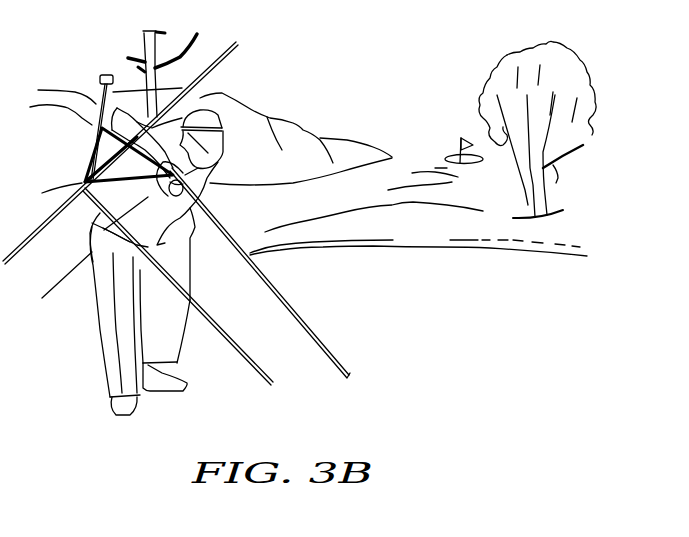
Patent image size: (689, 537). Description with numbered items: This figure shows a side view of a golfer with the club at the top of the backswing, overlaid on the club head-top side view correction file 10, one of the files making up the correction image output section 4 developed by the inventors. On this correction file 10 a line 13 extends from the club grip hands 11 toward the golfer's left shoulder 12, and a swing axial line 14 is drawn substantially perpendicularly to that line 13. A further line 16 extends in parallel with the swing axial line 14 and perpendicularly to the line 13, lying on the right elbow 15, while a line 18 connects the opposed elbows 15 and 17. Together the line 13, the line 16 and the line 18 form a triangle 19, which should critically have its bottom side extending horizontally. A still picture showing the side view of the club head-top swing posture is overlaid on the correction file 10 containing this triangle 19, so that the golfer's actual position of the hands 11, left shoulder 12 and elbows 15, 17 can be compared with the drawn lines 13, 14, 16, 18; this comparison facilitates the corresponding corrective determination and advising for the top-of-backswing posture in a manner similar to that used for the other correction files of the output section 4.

The correction image output section 4 is at (85, 381).
The club head-top side view correction file 10 is at (207, 343).
The club grip hands 11 is at (98, 122).
The left shoulder 12 is at (212, 191).
The line 13 is at (320, 338).
The swing axial line 14 is at (227, 120).
The right elbow 15 is at (82, 178).
The line 16 is at (236, 42).
The left elbow 17 is at (183, 224).
The line 18 is at (94, 224).
The triangle 19 is at (93, 147).